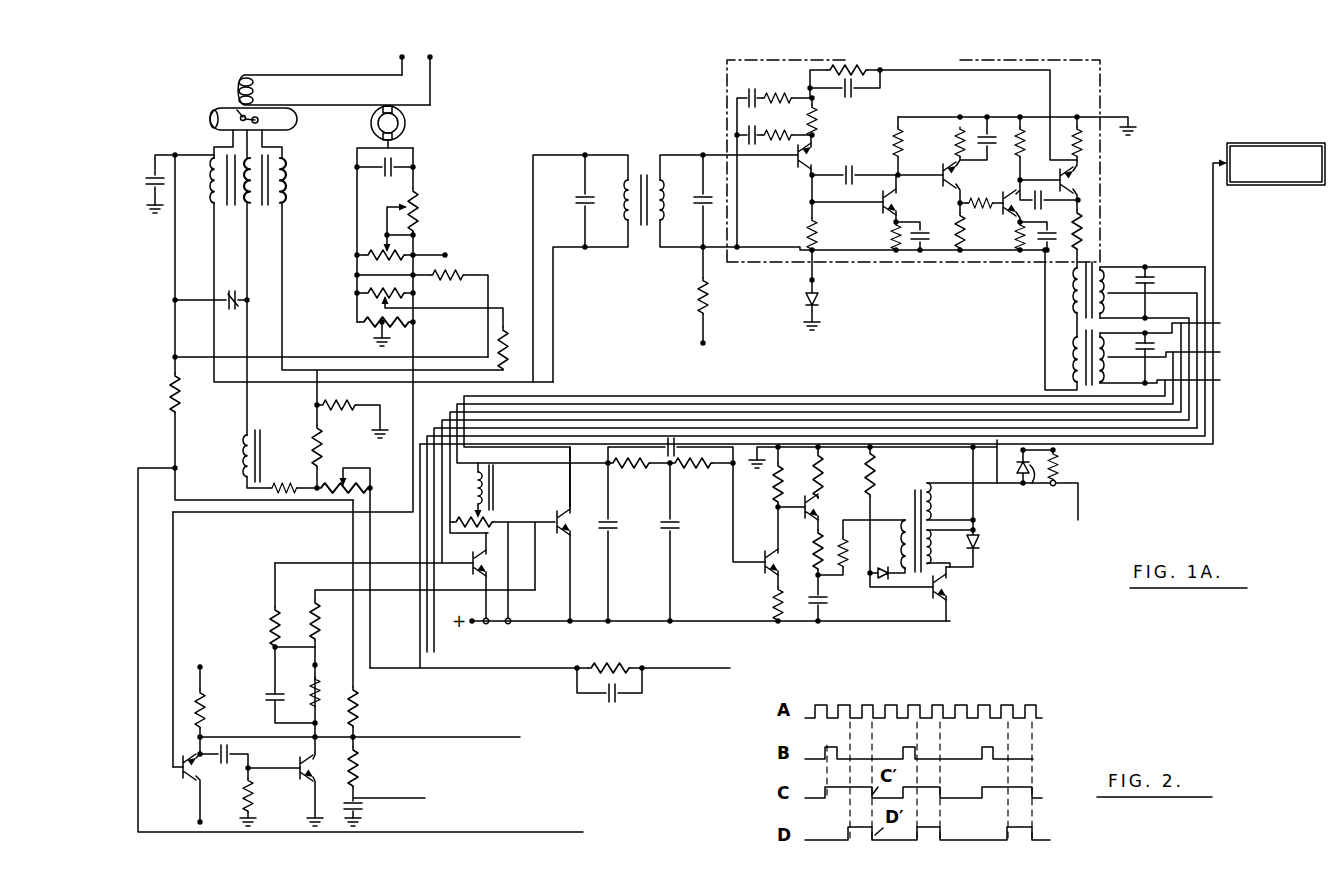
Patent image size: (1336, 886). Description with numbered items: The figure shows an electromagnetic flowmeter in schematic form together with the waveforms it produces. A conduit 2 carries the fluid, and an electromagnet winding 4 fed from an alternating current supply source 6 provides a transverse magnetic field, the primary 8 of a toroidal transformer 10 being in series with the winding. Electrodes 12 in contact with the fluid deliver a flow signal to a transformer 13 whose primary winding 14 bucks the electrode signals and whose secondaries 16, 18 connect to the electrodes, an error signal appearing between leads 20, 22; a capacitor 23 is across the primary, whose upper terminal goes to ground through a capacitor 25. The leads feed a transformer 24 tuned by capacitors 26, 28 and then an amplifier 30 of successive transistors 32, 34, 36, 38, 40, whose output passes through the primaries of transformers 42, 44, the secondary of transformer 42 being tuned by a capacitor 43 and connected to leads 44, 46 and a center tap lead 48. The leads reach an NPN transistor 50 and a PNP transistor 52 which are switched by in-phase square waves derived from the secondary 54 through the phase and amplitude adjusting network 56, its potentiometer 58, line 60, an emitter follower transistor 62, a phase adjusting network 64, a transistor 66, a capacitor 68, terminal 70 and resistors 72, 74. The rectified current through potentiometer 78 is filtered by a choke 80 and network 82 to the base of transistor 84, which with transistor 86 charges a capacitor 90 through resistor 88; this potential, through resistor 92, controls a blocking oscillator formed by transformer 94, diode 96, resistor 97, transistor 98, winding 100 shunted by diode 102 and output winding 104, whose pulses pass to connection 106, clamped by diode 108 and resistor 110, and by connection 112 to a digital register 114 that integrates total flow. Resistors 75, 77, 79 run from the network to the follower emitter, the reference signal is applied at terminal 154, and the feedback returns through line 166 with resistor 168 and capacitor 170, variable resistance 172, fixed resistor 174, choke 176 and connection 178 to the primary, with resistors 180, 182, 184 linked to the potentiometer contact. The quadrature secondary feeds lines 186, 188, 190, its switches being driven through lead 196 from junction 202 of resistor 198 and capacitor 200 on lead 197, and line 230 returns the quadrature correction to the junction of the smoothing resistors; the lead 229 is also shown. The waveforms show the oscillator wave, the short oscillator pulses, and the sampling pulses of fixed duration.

The conduit 2 is at (208, 114).
The winding 4 is at (256, 77).
The alternating current supply source 6 is at (409, 50).
The primary 8 is at (396, 107).
The toroidal transformer 10 is at (405, 125).
The electrodes 12 is at (240, 114).
The transformer 13 is at (291, 162).
The primary winding 14 is at (243, 198).
The secondary 16 is at (209, 188).
The secondary 18 is at (285, 199).
The lead 20 is at (298, 372).
The lead 22 is at (282, 383).
The capacitor 23 is at (240, 298).
The transformer 24 is at (645, 155).
The capacitor 25 is at (145, 176).
The capacitor 26 is at (590, 196).
The capacitor 28 is at (700, 196).
The amplifier 30 is at (726, 98).
The transistor 32 is at (793, 166).
The transistor 34 is at (880, 208).
The transistor 36 is at (942, 183).
The transistor 38 is at (1029, 183).
The transistor 40 is at (1058, 175).
The transformer 42 is at (1063, 302).
The capacitor 43 is at (1140, 272).
The transformer 44 is at (1063, 355).
The lead 46 is at (1155, 321).
The lead 48 is at (1163, 296).
The NPN transistor 50 is at (557, 511).
The PNP transistor 52 is at (467, 578).
The secondary 54 is at (406, 146).
The phase and amplitude adjusting network 56 is at (432, 223).
The potentiometer 58 is at (402, 301).
The line 60 is at (416, 352).
The transistor 62 is at (181, 776).
The phase adjusting network 64 is at (240, 775).
The transistor 66 is at (297, 782).
The capacitor 68 is at (270, 690).
The terminal 70 is at (272, 646).
The resistor 72 is at (321, 622).
The resistor 74 is at (263, 610).
The resistor 75 is at (450, 273).
The resistor 77 is at (193, 391).
The potentiometer 78 is at (497, 503).
The resistor 79 is at (362, 712).
The choke 80 is at (472, 488).
The network 82 is at (713, 437).
The transistor 84 is at (754, 533).
The transistor 86 is at (817, 503).
The resistor 88 is at (817, 534).
The capacitor 90 is at (828, 602).
The resistor 92 is at (837, 536).
The transformer 94 is at (908, 503).
The diode 96 is at (890, 583).
The resistor 97 is at (869, 464).
The transistor 98 is at (939, 598).
The winding 100 is at (956, 563).
The diode 102 is at (984, 544).
The output winding 104 is at (950, 474).
The connection 106 is at (1009, 485).
The diode 108 is at (1043, 482).
The resistor 110 is at (1058, 466).
The connection 112 is at (1208, 174).
The digital register 114 is at (1270, 186).
The terminal 154 is at (446, 250).
The line 166 is at (697, 670).
The resistor 168 is at (604, 666).
The capacitor 170 is at (617, 695).
The variable resistance 172 is at (343, 492).
The fixed resistor 174 is at (285, 485).
The choke 176 is at (237, 450).
The connection 178 is at (240, 405).
The resistor 180 is at (324, 462).
The resistor 182 is at (514, 316).
The resistor 184 is at (358, 402).
The line 186 is at (433, 630).
The line 188 is at (420, 623).
The line 190 is at (813, 516).
The lead 196 is at (383, 797).
The lead 197 is at (339, 751).
The resistor 198 is at (363, 764).
The capacitor 200 is at (366, 808).
The junction 202 is at (352, 770).
The line 229 is at (450, 738).
The line 230 is at (138, 520).